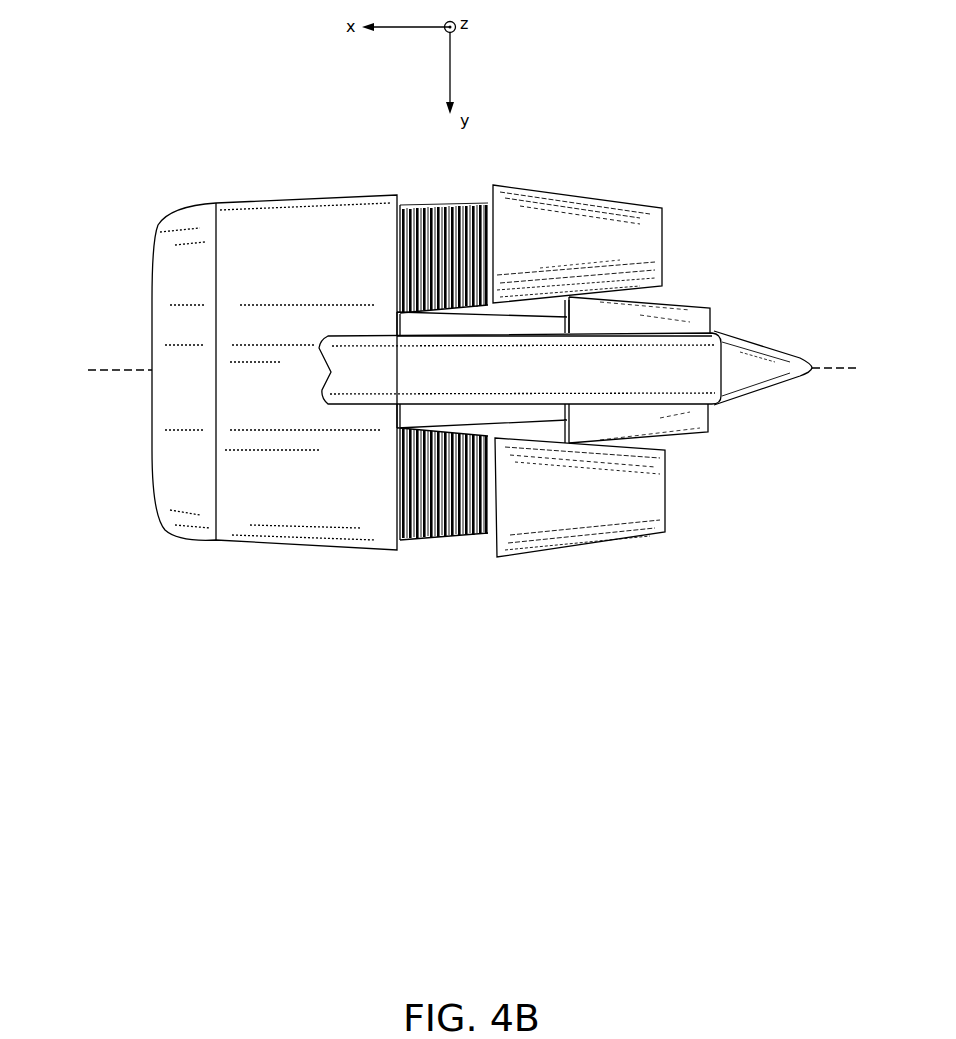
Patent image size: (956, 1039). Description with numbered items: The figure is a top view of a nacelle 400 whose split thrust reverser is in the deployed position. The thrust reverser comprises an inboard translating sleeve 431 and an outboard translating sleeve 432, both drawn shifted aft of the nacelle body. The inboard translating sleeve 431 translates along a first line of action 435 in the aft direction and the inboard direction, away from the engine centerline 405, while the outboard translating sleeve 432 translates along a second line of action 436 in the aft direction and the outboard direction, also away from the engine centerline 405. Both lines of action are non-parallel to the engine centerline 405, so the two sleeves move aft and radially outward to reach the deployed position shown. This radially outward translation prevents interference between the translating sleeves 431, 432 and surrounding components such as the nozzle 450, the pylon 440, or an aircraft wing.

The nacelle 400 is at (226, 107).
The engine centerline 405 is at (830, 368).
The inboard translating sleeve 431 is at (580, 193).
The outboard translating sleeve 432 is at (510, 558).
The first line of action 435 is at (535, 268).
The second line of action 436 is at (613, 473).
The pylon 440 is at (687, 333).
The nozzle 450 is at (677, 303).